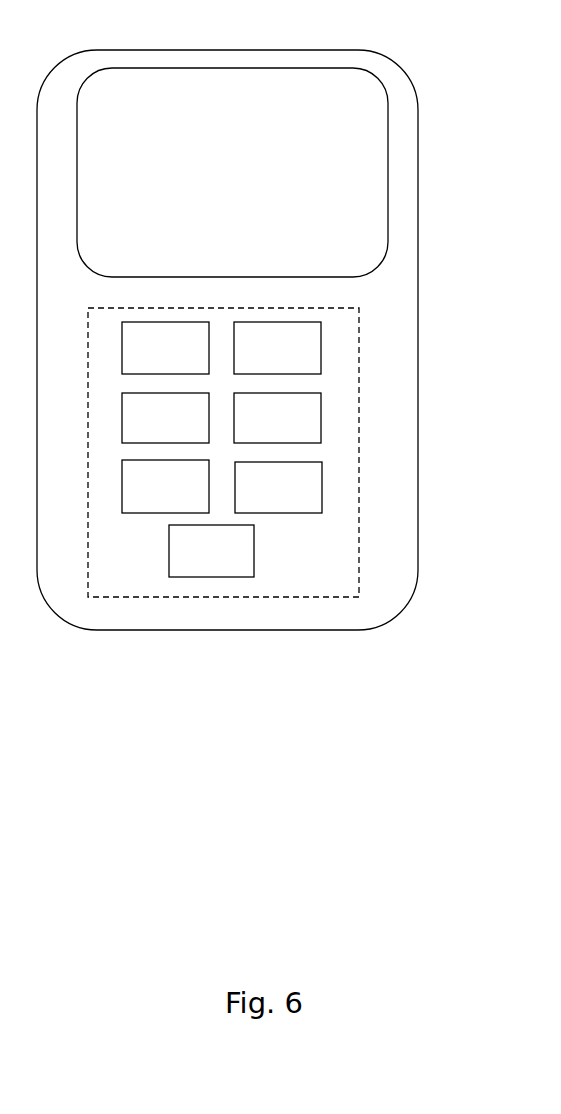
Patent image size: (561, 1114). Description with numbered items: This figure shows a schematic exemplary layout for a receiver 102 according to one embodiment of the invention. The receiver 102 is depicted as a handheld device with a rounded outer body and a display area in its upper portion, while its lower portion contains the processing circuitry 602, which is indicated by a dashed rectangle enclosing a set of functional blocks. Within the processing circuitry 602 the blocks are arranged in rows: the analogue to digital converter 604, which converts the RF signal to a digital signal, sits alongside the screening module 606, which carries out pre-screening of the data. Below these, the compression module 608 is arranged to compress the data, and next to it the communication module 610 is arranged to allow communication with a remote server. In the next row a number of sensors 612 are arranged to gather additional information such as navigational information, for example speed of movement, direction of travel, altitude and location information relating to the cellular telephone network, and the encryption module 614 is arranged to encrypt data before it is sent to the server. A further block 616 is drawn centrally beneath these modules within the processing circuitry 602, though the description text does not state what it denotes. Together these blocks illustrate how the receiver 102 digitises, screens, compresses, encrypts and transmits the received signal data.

The receiver 102 is at (223, 50).
The processing circuitry 602 is at (361, 336).
The analogue to digital converter 604 is at (182, 359).
The screening module 606 is at (294, 359).
The compression module 608 is at (182, 429).
The communication module 610 is at (294, 429).
The sensors 612 is at (182, 497).
The encryption module 614 is at (295, 497).
The user interface element 616 is at (228, 562).